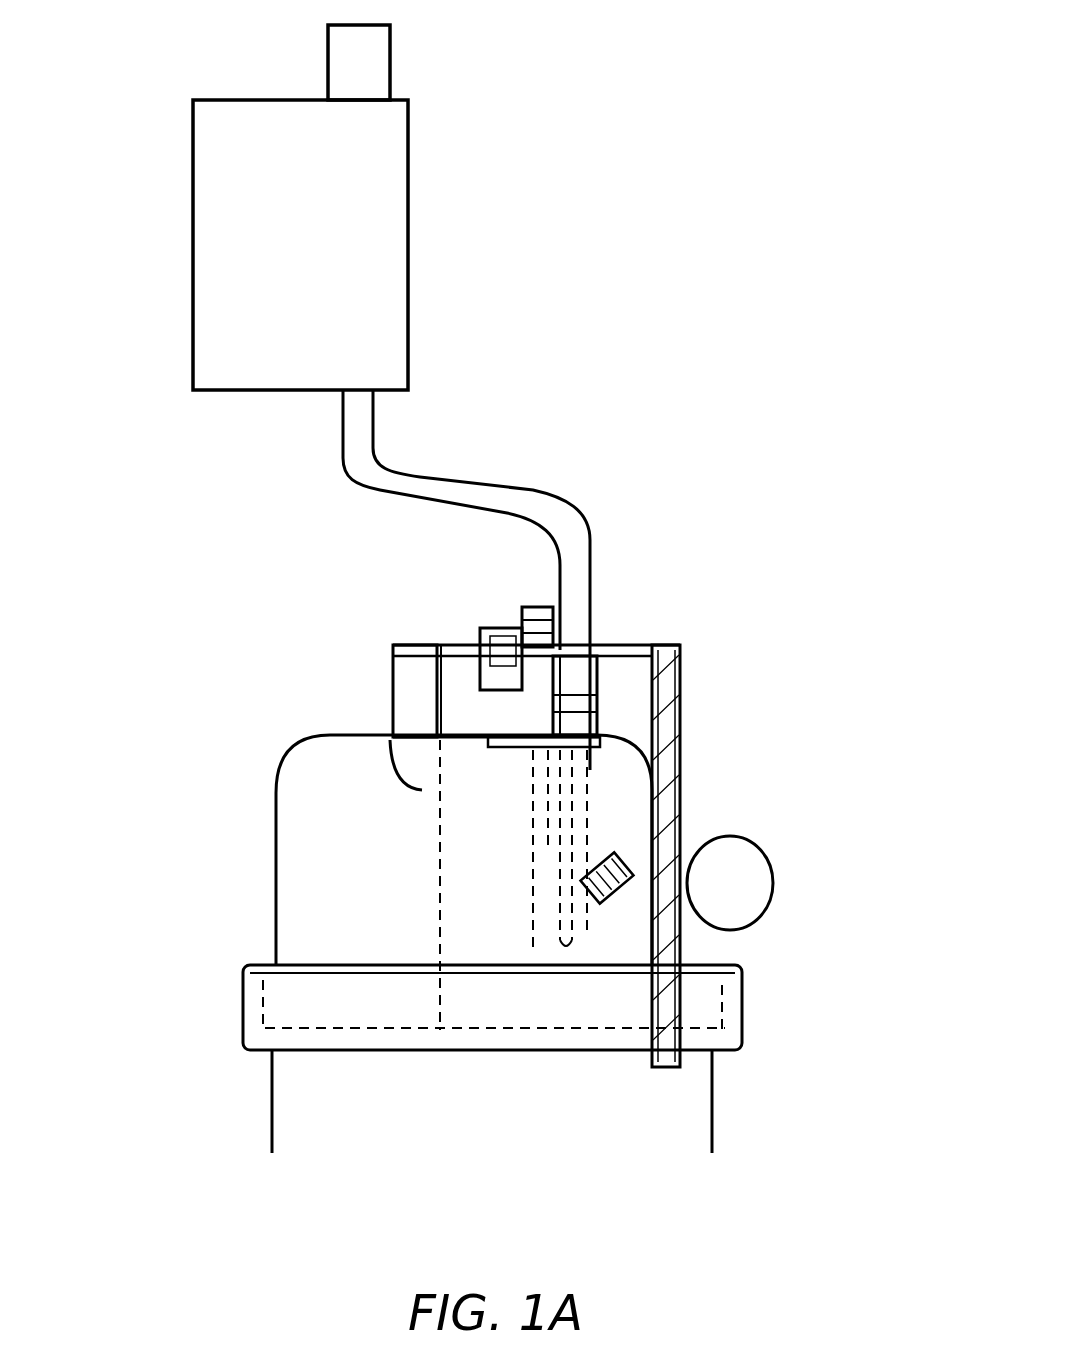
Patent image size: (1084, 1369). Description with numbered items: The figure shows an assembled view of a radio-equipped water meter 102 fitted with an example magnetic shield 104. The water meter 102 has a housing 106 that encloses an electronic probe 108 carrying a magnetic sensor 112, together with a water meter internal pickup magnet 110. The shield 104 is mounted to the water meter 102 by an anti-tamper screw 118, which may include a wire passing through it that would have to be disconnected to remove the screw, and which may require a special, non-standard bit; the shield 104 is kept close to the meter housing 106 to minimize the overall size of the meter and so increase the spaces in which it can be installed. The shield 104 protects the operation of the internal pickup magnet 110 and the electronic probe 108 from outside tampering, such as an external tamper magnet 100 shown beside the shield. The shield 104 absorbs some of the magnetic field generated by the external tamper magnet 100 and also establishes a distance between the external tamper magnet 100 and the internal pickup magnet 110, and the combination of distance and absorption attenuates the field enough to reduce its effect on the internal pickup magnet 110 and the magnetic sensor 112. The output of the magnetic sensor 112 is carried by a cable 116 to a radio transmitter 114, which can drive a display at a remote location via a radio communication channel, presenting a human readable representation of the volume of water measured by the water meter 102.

The external tamper magnet 100 is at (765, 850).
The water meter 102 is at (712, 1127).
The magnetic shield 104 is at (680, 663).
The housing 106 is at (273, 853).
The electronic probe 108 is at (577, 700).
The internal pickup magnet 110 is at (613, 857).
The magnetic sensor 112 is at (590, 958).
The radio transmitter 114 is at (408, 243).
The cable 116 is at (493, 487).
The anti-tamper screw 118 is at (527, 607).